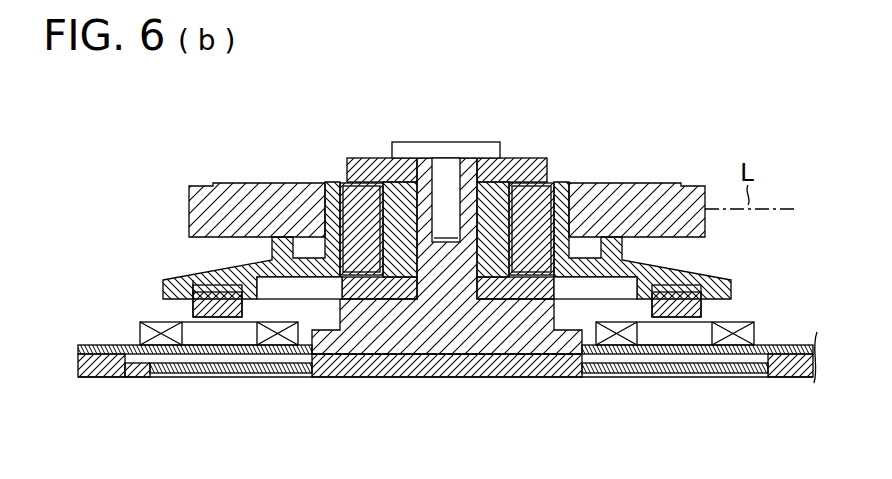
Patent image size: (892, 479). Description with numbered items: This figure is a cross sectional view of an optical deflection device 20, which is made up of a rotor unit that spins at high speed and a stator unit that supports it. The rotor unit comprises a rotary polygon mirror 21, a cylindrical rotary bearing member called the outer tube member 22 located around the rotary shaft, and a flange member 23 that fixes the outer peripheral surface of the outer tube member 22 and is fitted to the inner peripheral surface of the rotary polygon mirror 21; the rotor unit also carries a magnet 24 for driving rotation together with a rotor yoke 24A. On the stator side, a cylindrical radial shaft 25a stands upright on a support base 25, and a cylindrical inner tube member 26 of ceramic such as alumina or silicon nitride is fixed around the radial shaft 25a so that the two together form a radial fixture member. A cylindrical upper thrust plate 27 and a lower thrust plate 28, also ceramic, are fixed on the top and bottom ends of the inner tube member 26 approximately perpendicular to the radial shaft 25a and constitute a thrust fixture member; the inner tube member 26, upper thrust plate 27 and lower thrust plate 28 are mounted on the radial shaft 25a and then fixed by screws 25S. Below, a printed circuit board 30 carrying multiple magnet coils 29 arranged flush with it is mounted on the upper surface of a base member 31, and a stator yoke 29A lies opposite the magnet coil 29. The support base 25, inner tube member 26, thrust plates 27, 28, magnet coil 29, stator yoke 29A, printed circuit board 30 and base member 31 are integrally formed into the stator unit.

The optical deflection device 20 is at (614, 137).
The rotary polygon mirror 21 is at (233, 197).
The outer tube member 22 is at (358, 196).
The flange member 23 is at (213, 278).
The magnet 24 is at (193, 308).
The rotor yoke 24A is at (167, 288).
The support base 25 is at (422, 346).
The screws 25S is at (408, 142).
The radial shaft 25a is at (467, 167).
The inner tube member 26 is at (547, 182).
The upper thrust plate 27 is at (525, 158).
The lower thrust plate 28 is at (515, 292).
The magnet coil 29 is at (752, 330).
The stator yoke 29A is at (665, 375).
The printed circuit board 30 is at (795, 342).
The base member 31 is at (778, 376).